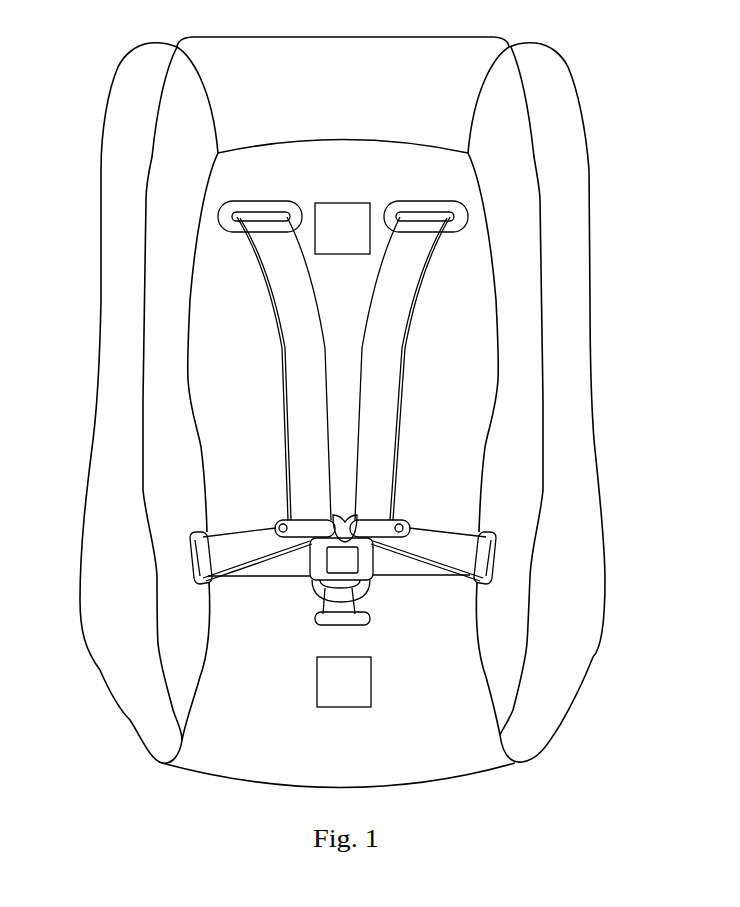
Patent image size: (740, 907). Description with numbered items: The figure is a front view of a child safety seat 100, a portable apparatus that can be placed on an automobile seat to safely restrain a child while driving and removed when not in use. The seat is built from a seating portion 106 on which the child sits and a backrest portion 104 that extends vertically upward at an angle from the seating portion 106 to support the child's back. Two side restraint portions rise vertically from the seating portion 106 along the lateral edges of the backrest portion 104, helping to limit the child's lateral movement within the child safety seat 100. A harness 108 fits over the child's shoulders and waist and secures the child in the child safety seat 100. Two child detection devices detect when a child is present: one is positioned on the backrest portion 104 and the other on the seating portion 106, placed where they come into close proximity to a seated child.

The child safety seat 100 is at (94, 49).
The backrest portion 104 is at (230, 355).
The seating portion 106 is at (395, 737).
The harness 108 is at (276, 488).